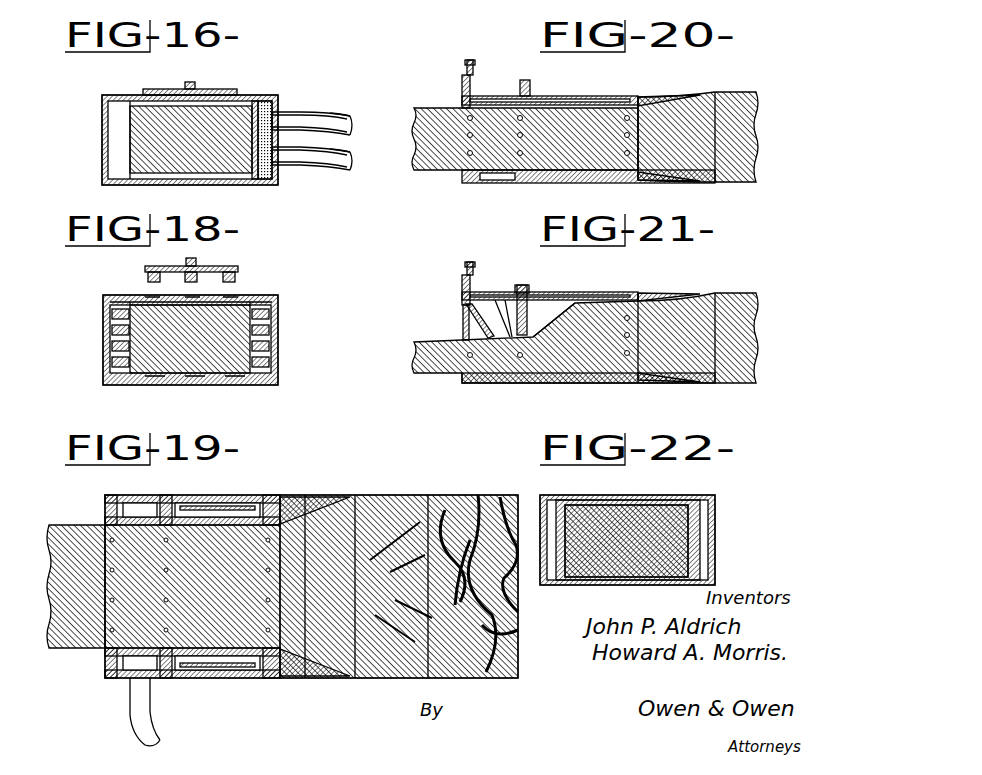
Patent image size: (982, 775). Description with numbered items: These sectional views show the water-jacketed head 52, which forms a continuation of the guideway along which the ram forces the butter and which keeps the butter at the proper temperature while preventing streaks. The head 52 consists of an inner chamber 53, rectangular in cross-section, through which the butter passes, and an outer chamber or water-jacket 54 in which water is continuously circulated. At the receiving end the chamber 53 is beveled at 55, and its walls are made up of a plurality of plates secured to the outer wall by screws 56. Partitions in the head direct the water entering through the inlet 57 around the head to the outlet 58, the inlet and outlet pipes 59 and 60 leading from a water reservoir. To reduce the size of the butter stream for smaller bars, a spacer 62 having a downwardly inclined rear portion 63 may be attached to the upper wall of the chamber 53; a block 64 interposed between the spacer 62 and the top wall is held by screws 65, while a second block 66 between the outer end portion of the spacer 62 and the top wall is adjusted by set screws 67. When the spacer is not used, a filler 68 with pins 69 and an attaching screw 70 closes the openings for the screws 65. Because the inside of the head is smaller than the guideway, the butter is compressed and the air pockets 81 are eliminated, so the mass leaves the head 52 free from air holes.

In FIG. 18, the water-jacketed head 52 is at (278, 385).
In FIG. 20, the water-jacketed head 52 is at (600, 96).
In FIG. 21, the water-jacketed head 52 is at (636, 297).
In FIG. 19, the water-jacketed head 52 is at (138, 495).
In FIG. 22, the water-jacketed head 52 is at (652, 496).
In FIG. 21, the inner chamber 53 is at (540, 312).
In FIG. 16, the outer chamber or water-jacket 54 is at (268, 100).
In FIG. 20, the beveled receiving end 55 is at (700, 97).
In FIG. 18, the screws 56 is at (240, 300).
In FIG. 16, the inlet 57 is at (305, 118).
In FIG. 16, the outlet 58 is at (290, 160).
In FIG. 16, the inlet pipe 59 is at (344, 118).
In FIG. 16, the outlet pipe 60 is at (335, 166).
In FIG. 21, the spacer 62 is at (478, 332).
In FIG. 21, the downwardly inclined rear portion 63 is at (556, 318).
In FIG. 21, the block 64 is at (512, 322).
In FIG. 21, the screws 65 is at (521, 285).
In FIG. 21, the block 66 is at (470, 326).
In FIG. 20, the set screws 67 is at (474, 62).
In FIG. 21, the set screws 67 is at (472, 262).
In FIG. 18, the filler 68 is at (172, 268).
In FIG. 18, the pins 69 is at (150, 278).
In FIG. 20, the pins 69 is at (545, 98).
In FIG. 18, the attaching screw 70 is at (198, 262).
In FIG. 20, the attaching screw 70 is at (527, 84).
In FIG. 19, the air pockets 81 is at (470, 496).